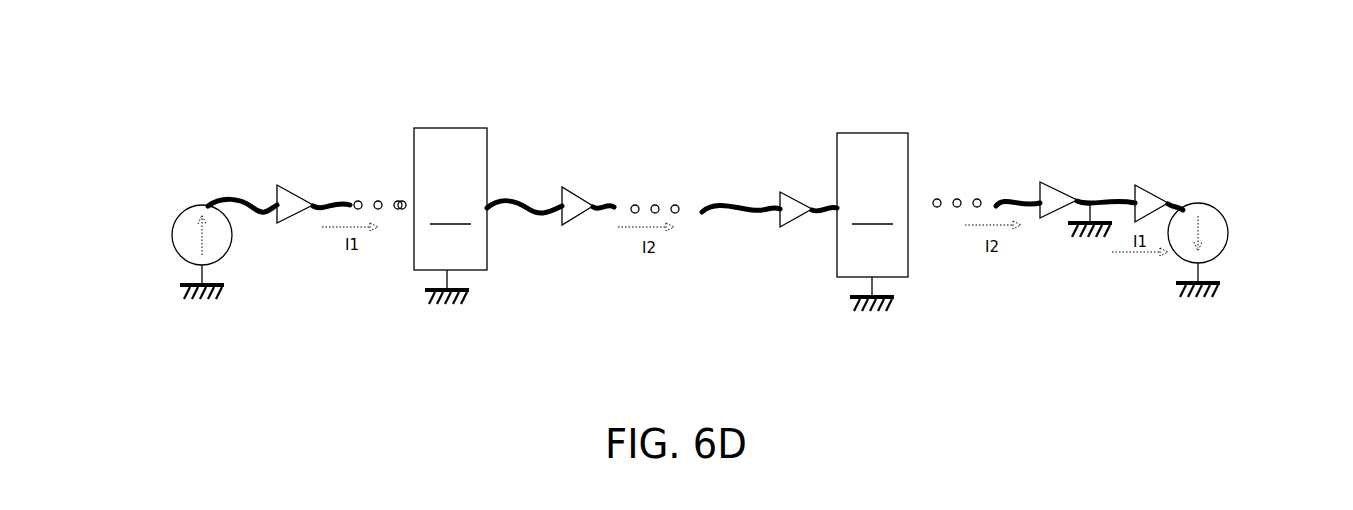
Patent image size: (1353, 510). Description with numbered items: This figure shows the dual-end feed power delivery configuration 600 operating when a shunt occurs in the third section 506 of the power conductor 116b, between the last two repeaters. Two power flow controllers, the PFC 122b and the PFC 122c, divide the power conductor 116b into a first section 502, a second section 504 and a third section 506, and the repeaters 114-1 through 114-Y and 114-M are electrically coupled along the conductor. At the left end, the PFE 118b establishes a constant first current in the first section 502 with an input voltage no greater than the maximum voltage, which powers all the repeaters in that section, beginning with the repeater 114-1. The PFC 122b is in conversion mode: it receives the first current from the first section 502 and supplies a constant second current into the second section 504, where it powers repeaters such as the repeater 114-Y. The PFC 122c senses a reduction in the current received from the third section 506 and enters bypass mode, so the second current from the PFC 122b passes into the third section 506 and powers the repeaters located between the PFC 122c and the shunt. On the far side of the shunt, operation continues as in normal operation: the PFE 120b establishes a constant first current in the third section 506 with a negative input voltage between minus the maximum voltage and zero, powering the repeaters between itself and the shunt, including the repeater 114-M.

The dual-end feed power delivery configuration 600 is at (577, 68).
The PFE 118b is at (174, 221).
The power conductor 116b is at (250, 196).
The repeater 114-1 is at (292, 189).
The first section 502 is at (314, 306).
The PFC 122b is at (467, 191).
The repeater 114-Y is at (802, 202).
The second section 504 is at (647, 296).
The PFC 122c is at (872, 196).
The repeater 114-M is at (1153, 192).
The PFE 120b is at (1231, 224).
The third section 506 is at (1005, 280).